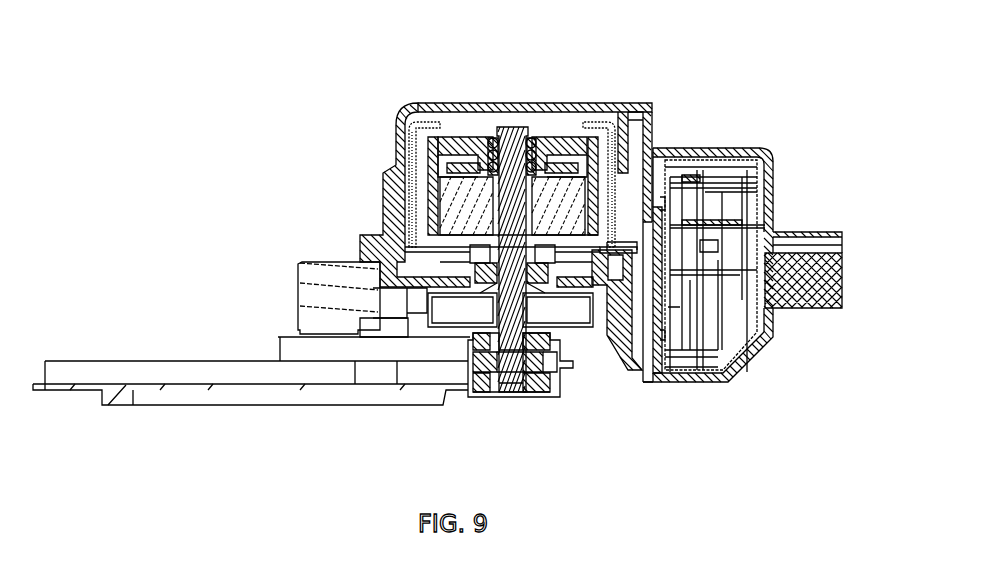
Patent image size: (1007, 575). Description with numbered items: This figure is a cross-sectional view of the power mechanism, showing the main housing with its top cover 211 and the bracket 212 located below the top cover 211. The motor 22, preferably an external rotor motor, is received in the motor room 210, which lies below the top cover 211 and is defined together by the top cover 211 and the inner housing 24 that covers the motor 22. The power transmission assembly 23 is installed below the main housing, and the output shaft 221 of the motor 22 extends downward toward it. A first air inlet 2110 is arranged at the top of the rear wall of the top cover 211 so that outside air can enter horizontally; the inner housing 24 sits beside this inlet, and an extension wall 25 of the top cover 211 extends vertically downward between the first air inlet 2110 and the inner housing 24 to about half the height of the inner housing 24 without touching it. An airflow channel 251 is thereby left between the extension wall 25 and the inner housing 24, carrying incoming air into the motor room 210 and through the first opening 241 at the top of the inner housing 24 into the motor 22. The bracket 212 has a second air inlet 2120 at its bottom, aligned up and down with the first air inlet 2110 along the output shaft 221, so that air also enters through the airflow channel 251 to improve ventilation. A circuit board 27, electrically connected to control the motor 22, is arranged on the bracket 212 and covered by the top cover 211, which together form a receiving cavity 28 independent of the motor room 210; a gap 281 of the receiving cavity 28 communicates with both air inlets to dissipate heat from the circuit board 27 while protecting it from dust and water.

The top cover 211 is at (408, 115).
The motor room 210 is at (490, 113).
The first air inlet 2110 is at (645, 122).
The airflow channel 251 is at (617, 118).
The inner housing 24 is at (413, 163).
The motor 22 is at (460, 199).
The first opening 241 is at (544, 127).
The output shaft 221 is at (512, 392).
The power transmission assembly 23 is at (260, 373).
The second air inlet 2120 is at (637, 365).
The extension wall 25 is at (628, 140).
The bracket 212 is at (773, 317).
The receiving cavity 28 is at (750, 285).
The circuit board 27 is at (678, 382).
The gap 281 is at (677, 223).